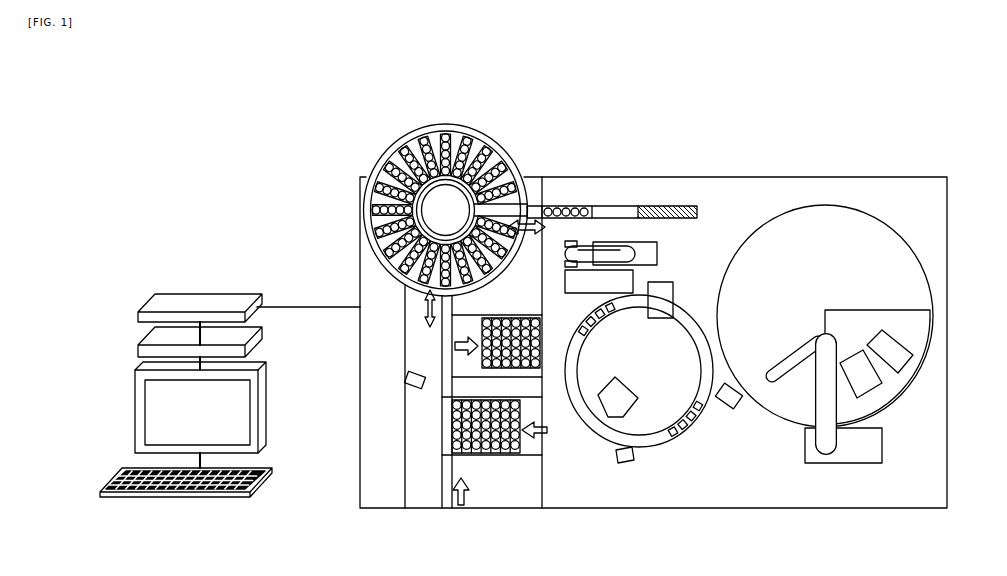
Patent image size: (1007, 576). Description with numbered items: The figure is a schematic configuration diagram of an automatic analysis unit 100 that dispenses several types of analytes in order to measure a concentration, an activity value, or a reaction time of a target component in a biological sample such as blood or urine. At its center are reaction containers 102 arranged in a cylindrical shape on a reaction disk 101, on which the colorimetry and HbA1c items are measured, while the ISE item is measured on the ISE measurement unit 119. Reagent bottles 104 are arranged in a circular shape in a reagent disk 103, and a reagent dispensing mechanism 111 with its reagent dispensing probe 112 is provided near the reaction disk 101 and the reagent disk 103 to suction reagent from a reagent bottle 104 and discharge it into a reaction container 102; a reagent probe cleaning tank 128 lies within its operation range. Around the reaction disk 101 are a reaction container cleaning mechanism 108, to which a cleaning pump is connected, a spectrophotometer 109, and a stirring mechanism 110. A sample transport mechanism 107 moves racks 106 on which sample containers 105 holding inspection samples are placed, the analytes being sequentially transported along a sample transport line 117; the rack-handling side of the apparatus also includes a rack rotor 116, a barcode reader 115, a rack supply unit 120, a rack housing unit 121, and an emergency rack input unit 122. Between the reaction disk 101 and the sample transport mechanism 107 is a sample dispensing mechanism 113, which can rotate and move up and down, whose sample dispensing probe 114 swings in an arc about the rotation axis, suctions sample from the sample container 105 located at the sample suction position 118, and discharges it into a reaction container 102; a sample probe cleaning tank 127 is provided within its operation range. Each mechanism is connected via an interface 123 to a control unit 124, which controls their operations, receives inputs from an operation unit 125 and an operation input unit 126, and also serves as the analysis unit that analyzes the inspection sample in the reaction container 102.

The automatic analysis unit 100 is at (855, 176).
The reaction disk 101 is at (642, 430).
The reaction container 102 is at (679, 440).
The reagent disk 103 is at (793, 398).
The reagent bottle 104 is at (868, 448).
The sample container 105 is at (484, 457).
The rack 106 is at (500, 457).
The sample transport mechanism 107 is at (548, 484).
The reaction container cleaning mechanism 108 is at (688, 275).
The spectrophotometer 109 is at (602, 422).
The stirring mechanism 110 is at (628, 464).
The reagent dispensing mechanism 111 is at (857, 452).
The reagent dispensing probe 112 is at (828, 446).
The sample dispensing mechanism 113 is at (673, 282).
The sample dispensing probe 114 is at (645, 255).
The barcode reader 115 is at (406, 380).
The rack rotor 116 is at (455, 132).
The sample transport line 117 is at (533, 176).
The sample suction position 118 is at (618, 248).
The ISE measurement unit 119 is at (565, 283).
The rack supply unit 120 is at (450, 428).
The rack housing unit 121 is at (452, 347).
The emergency rack input unit 122 is at (445, 485).
The interface 123 is at (137, 298).
The control unit 124 is at (137, 334).
The operation unit 125 is at (145, 409).
The operation input unit 126 is at (112, 472).
The sample probe cleaning tank 127 is at (568, 243).
The reagent probe cleaning tank 128 is at (730, 412).